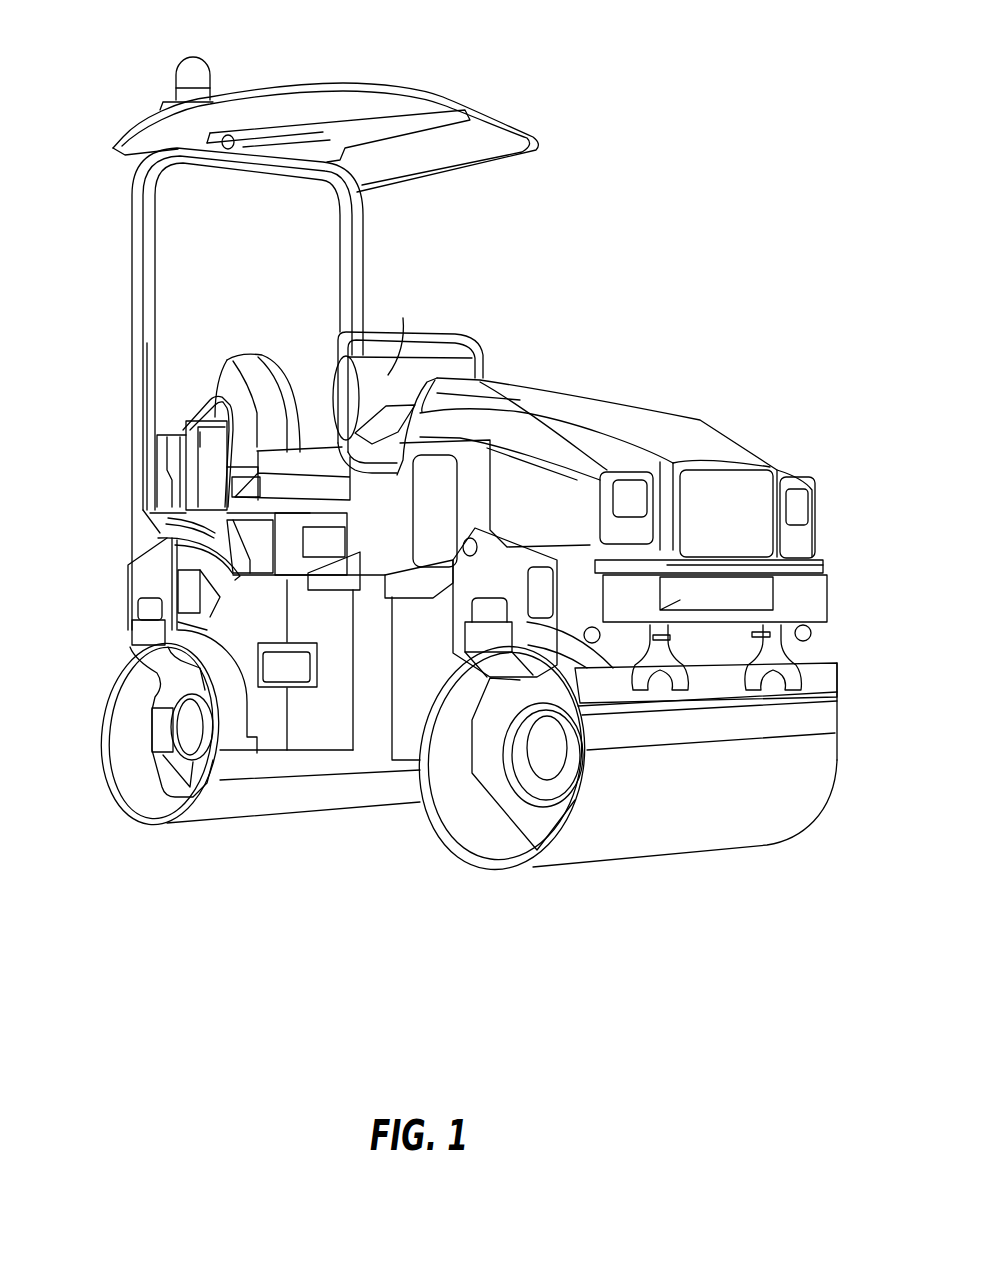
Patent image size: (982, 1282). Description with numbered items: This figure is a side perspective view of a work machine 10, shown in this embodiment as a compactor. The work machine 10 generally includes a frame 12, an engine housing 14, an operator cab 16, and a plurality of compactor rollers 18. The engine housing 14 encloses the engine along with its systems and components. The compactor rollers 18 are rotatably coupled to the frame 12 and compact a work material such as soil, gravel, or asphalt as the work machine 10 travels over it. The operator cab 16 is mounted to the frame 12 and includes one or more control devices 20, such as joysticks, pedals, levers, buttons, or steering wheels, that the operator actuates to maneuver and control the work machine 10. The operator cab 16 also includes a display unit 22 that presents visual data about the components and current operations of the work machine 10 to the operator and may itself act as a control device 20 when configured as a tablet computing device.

The work machine 10 is at (678, 78).
The frame 12 is at (328, 737).
The engine housing 14 is at (623, 443).
The operator cab 16 is at (143, 288).
The compactor rollers 18 is at (118, 720).
The control devices 20 is at (217, 383).
The display unit 22 is at (403, 333).